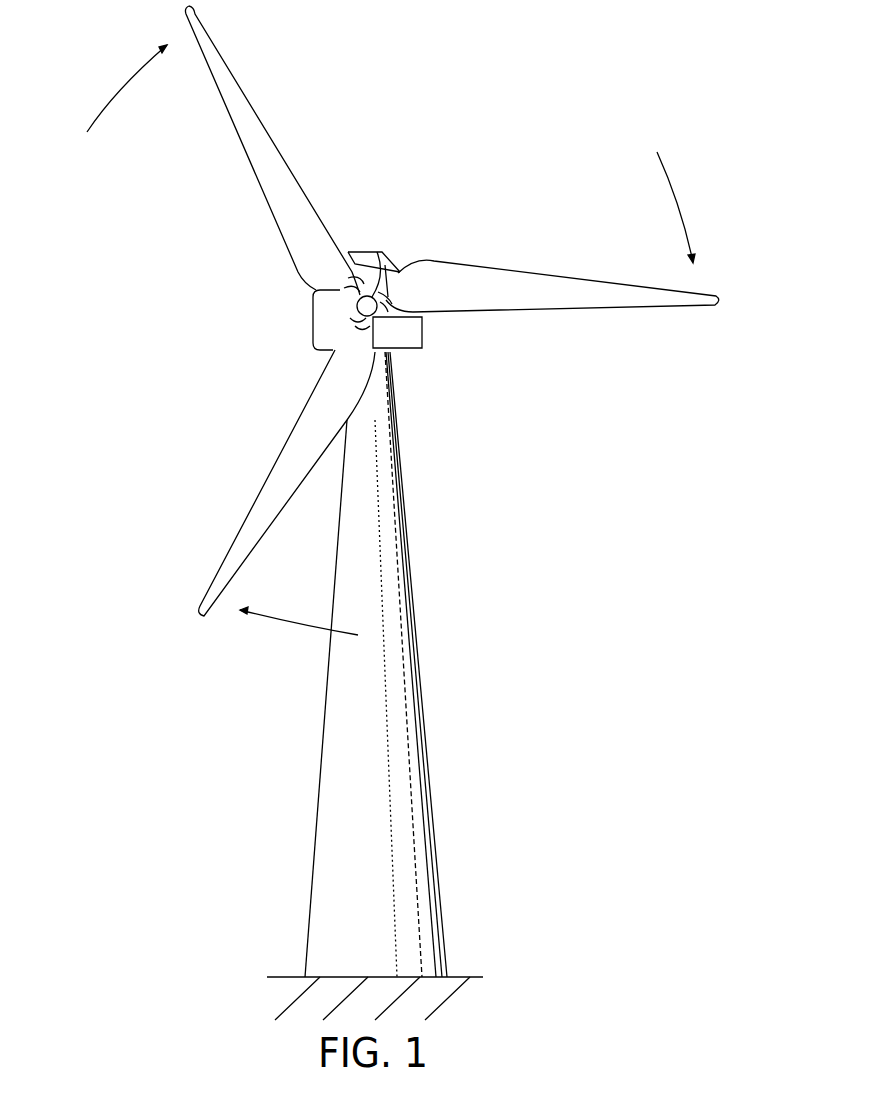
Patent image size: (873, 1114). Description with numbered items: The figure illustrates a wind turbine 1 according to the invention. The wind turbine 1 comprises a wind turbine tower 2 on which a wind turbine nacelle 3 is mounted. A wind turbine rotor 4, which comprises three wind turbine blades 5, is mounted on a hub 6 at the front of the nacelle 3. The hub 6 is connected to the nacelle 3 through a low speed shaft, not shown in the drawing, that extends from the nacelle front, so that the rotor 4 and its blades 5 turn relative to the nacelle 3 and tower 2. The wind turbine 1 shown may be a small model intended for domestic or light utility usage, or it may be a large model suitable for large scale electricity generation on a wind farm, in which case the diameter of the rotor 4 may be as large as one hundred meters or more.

The wind turbine 1 is at (566, 817).
The wind turbine tower 2 is at (422, 703).
The wind turbine nacelle 3 is at (415, 331).
The wind turbine rotor 4 is at (513, 124).
The wind turbine blades 5 is at (640, 287).
The hub 6 is at (368, 298).